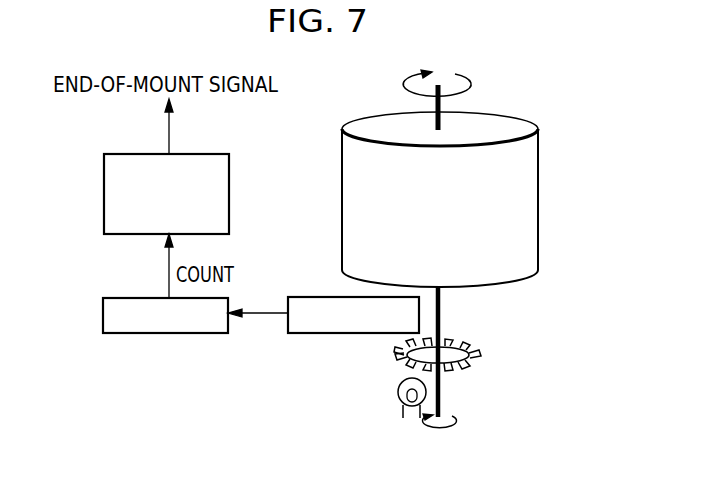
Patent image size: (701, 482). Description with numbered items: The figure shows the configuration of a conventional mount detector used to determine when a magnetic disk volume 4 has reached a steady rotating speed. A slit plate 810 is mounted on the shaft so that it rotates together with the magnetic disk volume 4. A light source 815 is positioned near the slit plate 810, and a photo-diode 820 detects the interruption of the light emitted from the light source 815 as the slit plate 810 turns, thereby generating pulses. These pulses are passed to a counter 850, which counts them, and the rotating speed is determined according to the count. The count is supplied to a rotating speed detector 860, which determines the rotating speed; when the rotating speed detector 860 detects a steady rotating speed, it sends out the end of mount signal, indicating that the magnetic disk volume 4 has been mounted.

The magnetic disk volume 4 is at (513, 115).
The slit plate 810 is at (470, 359).
The light source 815 is at (398, 395).
The photo-diode 820 is at (358, 333).
The counter 850 is at (128, 333).
The rotating speed detector 860 is at (104, 214).